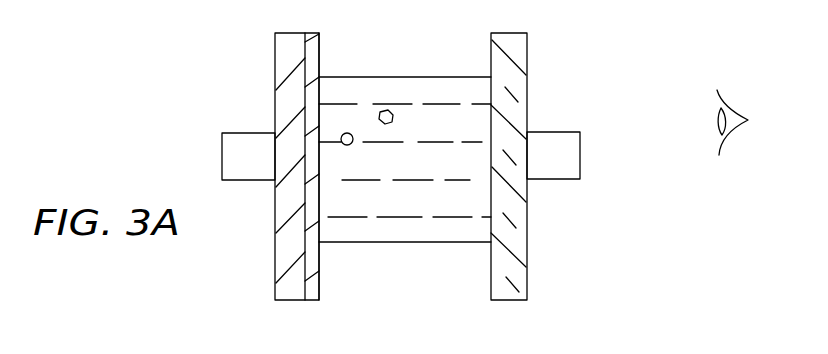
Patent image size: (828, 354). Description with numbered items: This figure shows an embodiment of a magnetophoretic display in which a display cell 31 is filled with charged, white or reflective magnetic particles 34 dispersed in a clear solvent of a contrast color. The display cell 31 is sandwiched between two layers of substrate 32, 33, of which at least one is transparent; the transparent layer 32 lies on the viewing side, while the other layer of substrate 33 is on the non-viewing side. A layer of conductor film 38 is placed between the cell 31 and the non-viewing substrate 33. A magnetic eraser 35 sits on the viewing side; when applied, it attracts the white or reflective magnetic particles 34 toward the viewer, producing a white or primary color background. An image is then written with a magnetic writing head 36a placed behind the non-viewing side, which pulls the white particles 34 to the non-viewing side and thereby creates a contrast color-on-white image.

The display cell 31 is at (442, 242).
The transparent layer of substrate 32 is at (527, 268).
The layer of substrate 33 is at (275, 266).
The magnetic particles 34 is at (388, 110).
The magnetic eraser 35 is at (580, 148).
The magnetic writing head 36a is at (222, 148).
The conductor film 38 is at (319, 266).